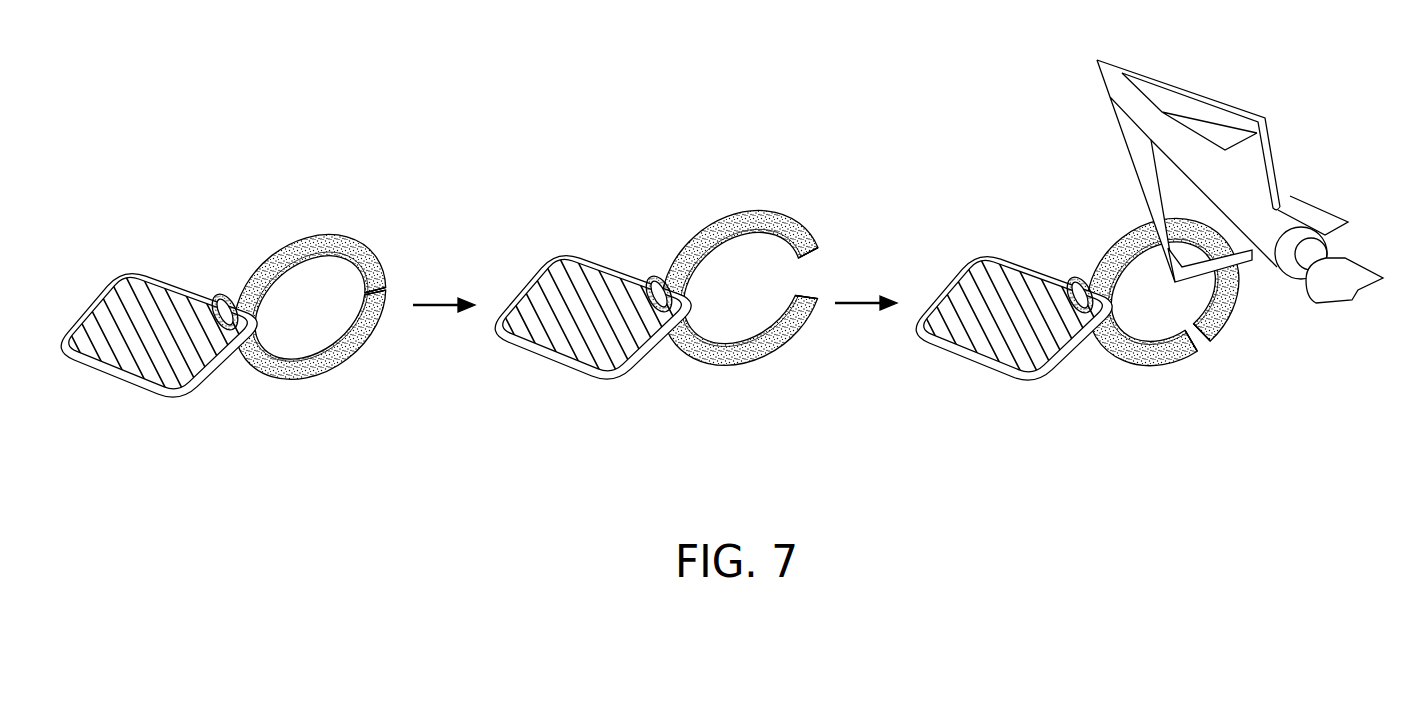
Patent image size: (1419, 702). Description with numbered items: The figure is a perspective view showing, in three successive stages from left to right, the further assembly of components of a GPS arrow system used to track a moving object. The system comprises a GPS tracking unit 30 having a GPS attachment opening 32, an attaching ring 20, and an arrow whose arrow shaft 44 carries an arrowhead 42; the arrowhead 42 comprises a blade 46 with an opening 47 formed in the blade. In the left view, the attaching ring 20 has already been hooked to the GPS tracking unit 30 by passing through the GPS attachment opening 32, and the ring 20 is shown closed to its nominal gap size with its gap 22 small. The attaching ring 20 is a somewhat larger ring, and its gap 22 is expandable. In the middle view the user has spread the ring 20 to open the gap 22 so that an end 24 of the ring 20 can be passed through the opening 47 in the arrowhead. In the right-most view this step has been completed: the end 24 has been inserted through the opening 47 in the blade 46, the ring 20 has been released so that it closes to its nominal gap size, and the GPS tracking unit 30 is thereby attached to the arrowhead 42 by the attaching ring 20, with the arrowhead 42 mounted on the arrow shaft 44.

The attaching ring 20 is at (310, 233).
The gap 22 is at (384, 296).
The end 24 is at (387, 270).
The GPS tracking unit 30 is at (157, 272).
The GPS attachment opening 32 is at (219, 287).
The arrowhead 42 is at (1202, 159).
The arrow shaft 44 is at (1352, 274).
The blade 46 is at (1140, 155).
The opening 47 is at (1222, 133).